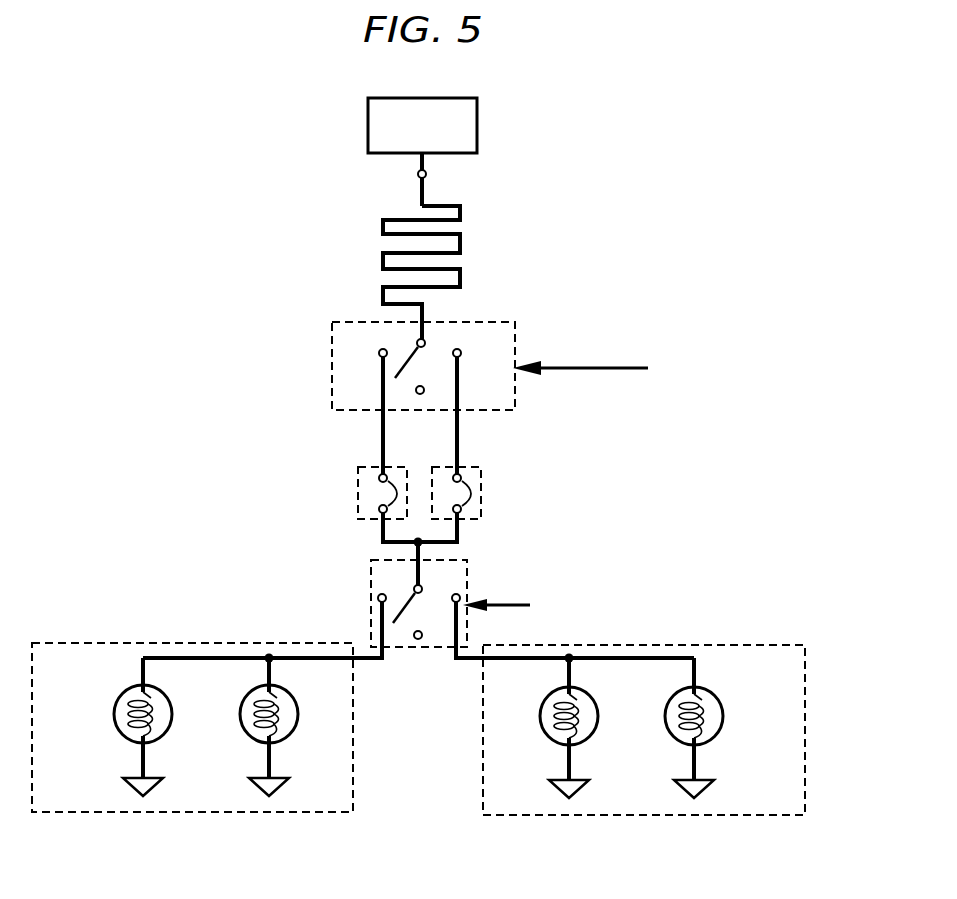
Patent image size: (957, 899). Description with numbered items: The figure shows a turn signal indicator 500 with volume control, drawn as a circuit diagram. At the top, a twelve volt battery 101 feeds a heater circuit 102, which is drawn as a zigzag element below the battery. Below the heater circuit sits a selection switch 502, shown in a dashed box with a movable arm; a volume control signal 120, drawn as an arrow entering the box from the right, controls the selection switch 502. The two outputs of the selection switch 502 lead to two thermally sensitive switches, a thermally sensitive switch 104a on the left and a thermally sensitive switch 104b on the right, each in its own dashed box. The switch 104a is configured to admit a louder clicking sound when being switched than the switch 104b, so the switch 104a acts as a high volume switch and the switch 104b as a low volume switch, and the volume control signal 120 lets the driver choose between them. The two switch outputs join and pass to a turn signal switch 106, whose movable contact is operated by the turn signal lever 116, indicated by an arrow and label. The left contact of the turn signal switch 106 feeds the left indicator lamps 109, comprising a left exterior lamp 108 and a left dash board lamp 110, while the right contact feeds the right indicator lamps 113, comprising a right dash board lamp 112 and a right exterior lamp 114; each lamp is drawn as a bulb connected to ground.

The turn signal indicator 500 is at (197, 356).
The 12 volt battery 101 is at (477, 122).
The heater circuit 102 is at (383, 223).
The selection switch 502 is at (332, 371).
The volume control signal 120 is at (590, 365).
The thermally sensitive switch 104a is at (358, 480).
The thermally sensitive switch 104b is at (481, 480).
The turn signal switch 106 is at (371, 601).
The turn signal lever 116 is at (504, 601).
The left indicator lamps 109 is at (353, 729).
The right indicator lamps 113 is at (805, 729).
The left exterior lamp 108 is at (118, 733).
The left dash board lamp 110 is at (244, 733).
The right dash board lamp 112 is at (597, 738).
The right exterior lamp 114 is at (722, 738).